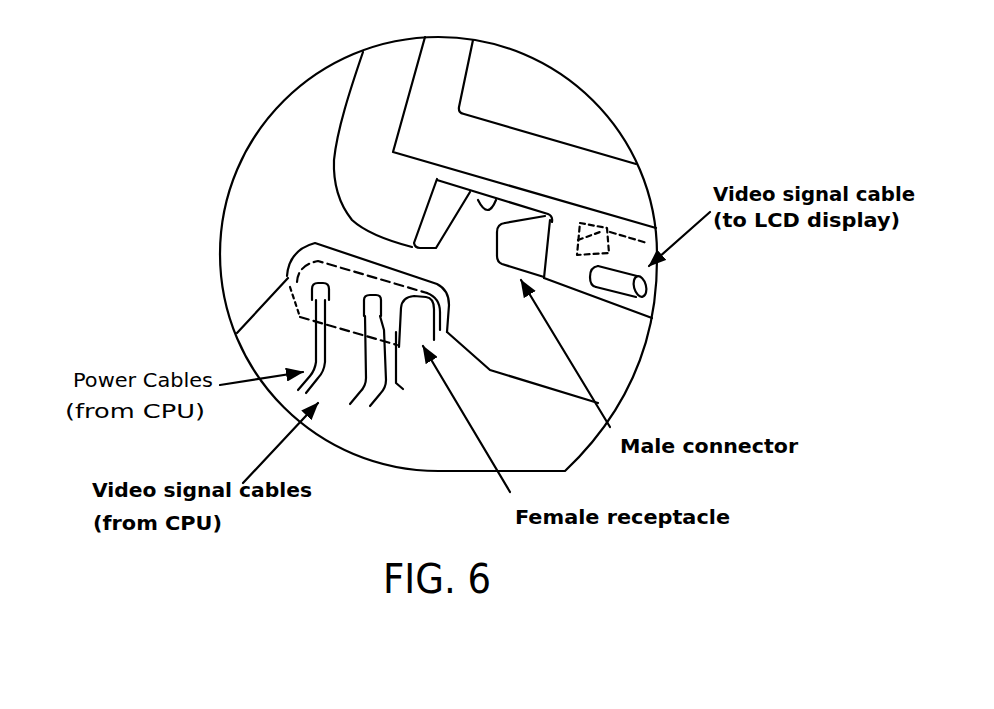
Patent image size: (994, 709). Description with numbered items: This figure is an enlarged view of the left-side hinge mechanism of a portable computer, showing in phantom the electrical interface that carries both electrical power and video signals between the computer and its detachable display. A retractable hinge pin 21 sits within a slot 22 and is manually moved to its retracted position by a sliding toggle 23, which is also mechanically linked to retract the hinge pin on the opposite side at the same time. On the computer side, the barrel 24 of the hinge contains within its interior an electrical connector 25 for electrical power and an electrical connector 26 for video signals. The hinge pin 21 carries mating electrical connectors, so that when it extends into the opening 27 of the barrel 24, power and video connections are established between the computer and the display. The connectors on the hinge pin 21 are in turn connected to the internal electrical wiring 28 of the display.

The retractable hinge pin 21 is at (497, 238).
The slot 22 is at (505, 198).
The sliding toggle 23 is at (622, 296).
The barrel 24 is at (317, 243).
The electrical connector 25 is at (313, 290).
The electrical connector 26 is at (392, 354).
The opening 27 is at (430, 328).
The internal electrical wiring 28 is at (612, 236).